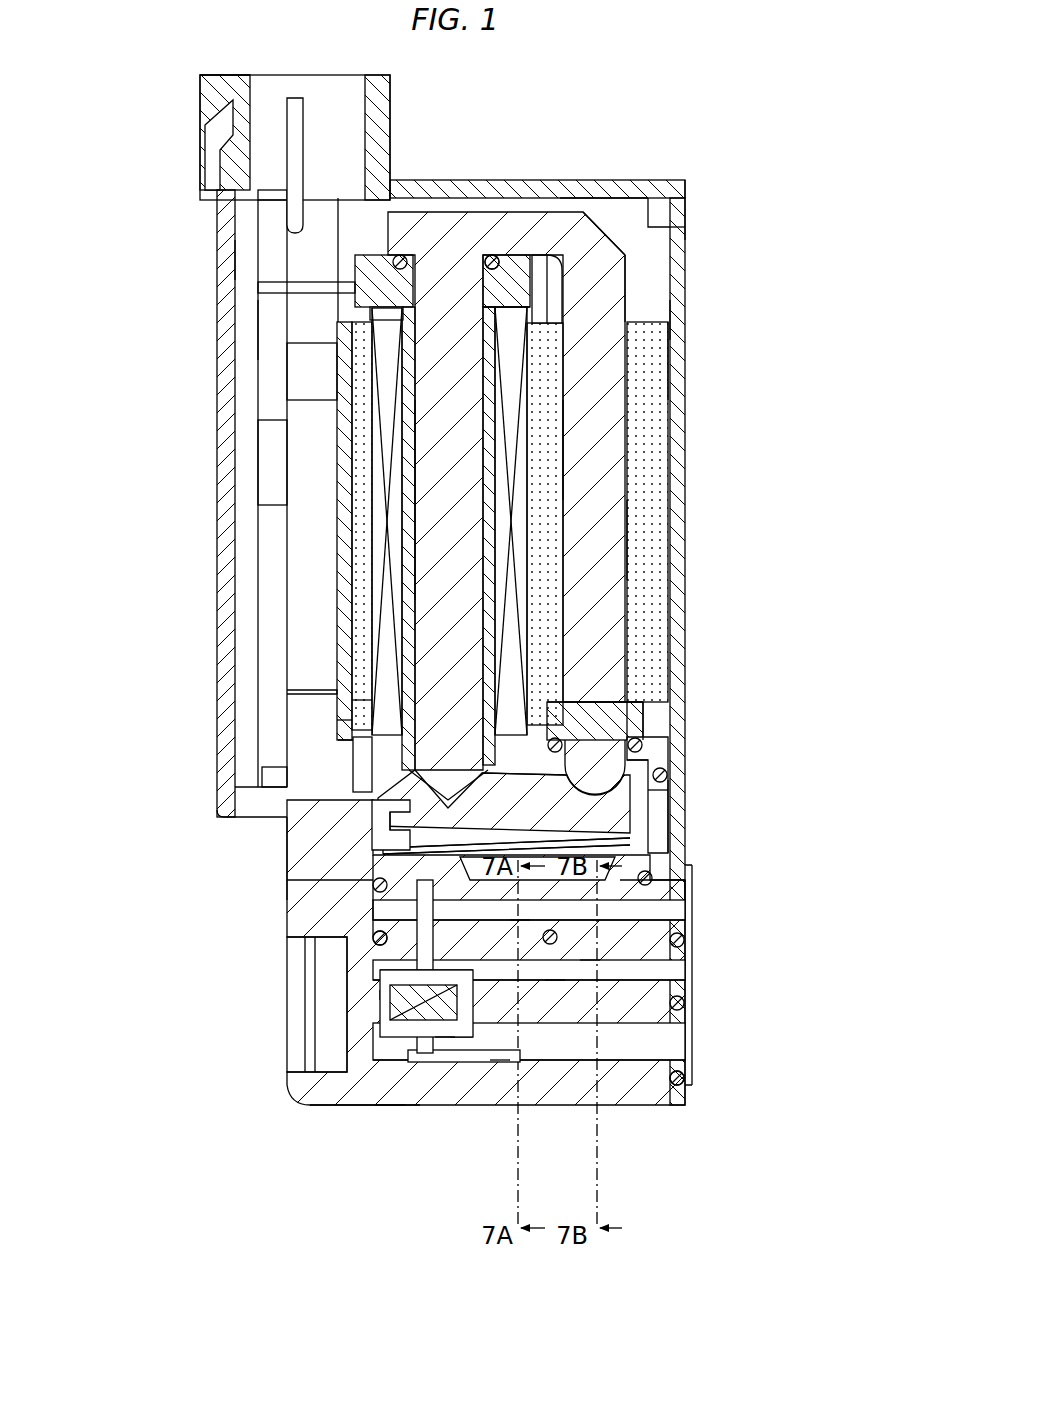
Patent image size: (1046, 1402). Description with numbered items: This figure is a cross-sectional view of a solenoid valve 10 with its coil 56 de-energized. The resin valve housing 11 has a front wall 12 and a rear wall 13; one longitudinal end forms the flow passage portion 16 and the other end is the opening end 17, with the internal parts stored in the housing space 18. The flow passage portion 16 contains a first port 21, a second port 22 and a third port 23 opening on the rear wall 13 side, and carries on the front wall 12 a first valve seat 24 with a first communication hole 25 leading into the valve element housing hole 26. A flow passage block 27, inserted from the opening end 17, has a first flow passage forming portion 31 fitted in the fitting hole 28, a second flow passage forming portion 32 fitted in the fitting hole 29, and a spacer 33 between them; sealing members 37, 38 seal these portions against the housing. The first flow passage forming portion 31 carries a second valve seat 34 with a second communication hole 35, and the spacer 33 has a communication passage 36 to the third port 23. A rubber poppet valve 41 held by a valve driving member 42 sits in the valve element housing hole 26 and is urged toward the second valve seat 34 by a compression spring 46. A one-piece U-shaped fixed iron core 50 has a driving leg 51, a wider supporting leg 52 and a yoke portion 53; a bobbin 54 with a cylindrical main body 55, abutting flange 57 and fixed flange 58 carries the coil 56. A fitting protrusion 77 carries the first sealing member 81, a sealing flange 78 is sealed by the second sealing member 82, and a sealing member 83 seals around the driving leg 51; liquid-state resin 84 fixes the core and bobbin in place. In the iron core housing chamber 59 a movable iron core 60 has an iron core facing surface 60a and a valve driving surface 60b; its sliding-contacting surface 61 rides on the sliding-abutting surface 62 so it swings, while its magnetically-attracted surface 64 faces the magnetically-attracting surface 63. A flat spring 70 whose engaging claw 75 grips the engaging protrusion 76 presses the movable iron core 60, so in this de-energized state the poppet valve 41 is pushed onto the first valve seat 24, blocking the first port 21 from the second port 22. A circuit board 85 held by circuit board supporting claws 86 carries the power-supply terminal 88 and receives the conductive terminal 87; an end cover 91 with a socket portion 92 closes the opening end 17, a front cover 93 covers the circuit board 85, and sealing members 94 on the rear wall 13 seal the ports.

The solenoid valve 10 is at (658, 130).
The valve housing 11 is at (688, 237).
The front wall 12 is at (228, 460).
The rear wall 13 is at (678, 318).
The flow passage portion 16 is at (362, 1106).
The opening end 17 is at (648, 275).
The housing space 18 is at (552, 290).
The first port 21 is at (688, 1045).
The second port 22 is at (688, 972).
The third port 23 is at (688, 908).
The first valve seat 24 is at (415, 1063).
The first communication hole 25 is at (425, 1063).
The valve element housing hole 26 is at (300, 1052).
The flow passage block 27 is at (398, 896).
The fitting hole 28 is at (520, 950).
The fitting hole 29 is at (690, 870).
The first flow passage forming portion 31 is at (460, 1050).
The second flow passage forming portion 32 is at (590, 980).
The spacer 33 is at (374, 935).
The second valve seat 34 is at (388, 995).
The second communication hole 35 is at (385, 970).
The communication passage 36 is at (500, 1080).
The sealing member 37 is at (555, 1000).
The sealing member 38 is at (662, 880).
The poppet valve 41 is at (420, 1005).
The valve driving member 42 is at (445, 1040).
The compression spring 46 is at (390, 1106).
The fixed iron core 50 is at (600, 402).
The driving leg 51 is at (605, 540).
The supporting leg 52 is at (600, 446).
The yoke portion 53 is at (468, 240).
The bobbin 54 is at (492, 488).
The cylindrical main body 55 is at (405, 580).
The coil 56 is at (375, 523).
The abutting flange 57 is at (514, 295).
The fixed flange 58 is at (365, 672).
The iron core housing chamber 59 is at (356, 745).
The movable iron core 60 is at (511, 762).
The iron core facing surface 60a is at (620, 697).
The valve driving surface 60b is at (640, 838).
The sliding-contacting surface 61 is at (633, 755).
The sliding-abutting surface 62 is at (668, 815).
The magnetically-attracting surface 63 is at (378, 812).
The magnetically-attracted surface 64 is at (385, 830).
The flat spring 70 is at (574, 843).
The engaging claw 75 is at (300, 838).
The engaging protrusion 76 is at (300, 860).
The fitting protrusion 77 is at (660, 795).
The sealing flange 78 is at (650, 690).
The first sealing member 81 is at (340, 742).
The second sealing member 82 is at (640, 715).
The sealing member 83 is at (487, 262).
The liquid-state resin 84 is at (660, 355).
The circuit board 85 is at (270, 330).
The circuit board supporting claws 86 is at (312, 372).
The conductive terminal 87 is at (318, 290).
The power-supply terminal 88 is at (295, 139).
The end cover 91 is at (595, 186).
The socket portion 92 is at (207, 93).
The front cover 93 is at (230, 262).
The sealing members 94 is at (690, 1083).